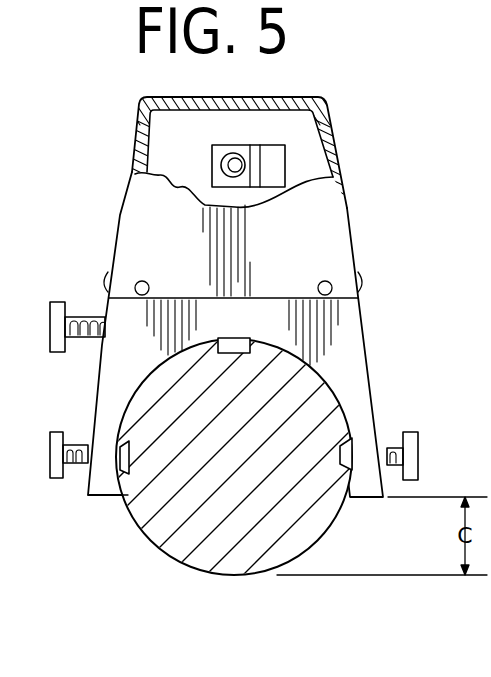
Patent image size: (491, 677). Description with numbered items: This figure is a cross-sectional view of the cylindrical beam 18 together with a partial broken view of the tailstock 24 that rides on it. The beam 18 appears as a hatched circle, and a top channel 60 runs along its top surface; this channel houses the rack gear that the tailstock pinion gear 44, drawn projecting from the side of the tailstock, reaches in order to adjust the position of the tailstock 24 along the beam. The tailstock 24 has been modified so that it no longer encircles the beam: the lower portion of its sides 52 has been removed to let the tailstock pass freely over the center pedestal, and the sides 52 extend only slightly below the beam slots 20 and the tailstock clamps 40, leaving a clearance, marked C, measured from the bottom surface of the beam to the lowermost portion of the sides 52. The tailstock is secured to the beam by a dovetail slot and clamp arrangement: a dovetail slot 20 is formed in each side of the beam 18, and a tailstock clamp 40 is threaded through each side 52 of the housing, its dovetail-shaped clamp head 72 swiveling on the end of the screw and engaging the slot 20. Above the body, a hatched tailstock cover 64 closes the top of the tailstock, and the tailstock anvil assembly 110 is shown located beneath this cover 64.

The beam 18 is at (320, 540).
The dovetail slot 20 is at (132, 457).
The tailstock 24 is at (348, 327).
The tailstock clamp 40 is at (52, 446).
The tailstock pinion gear 44 is at (55, 325).
The sides 52 is at (104, 478).
The top channel 60 is at (232, 353).
The tailstock cover 64 is at (327, 102).
The clamp head 72 is at (343, 451).
The tailstock anvil assembly 110 is at (268, 160).